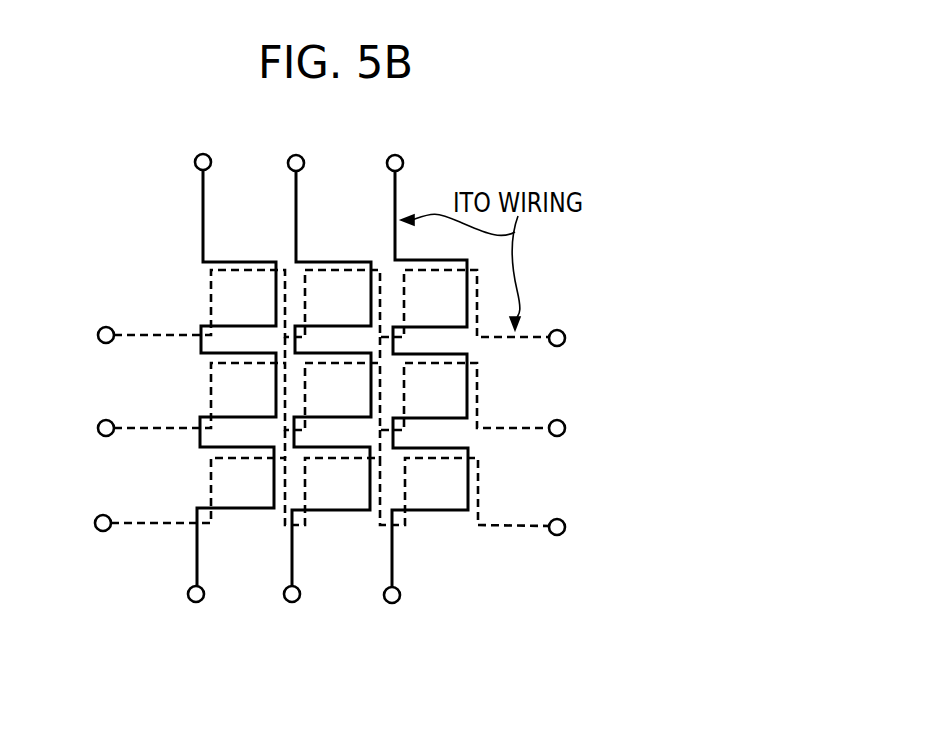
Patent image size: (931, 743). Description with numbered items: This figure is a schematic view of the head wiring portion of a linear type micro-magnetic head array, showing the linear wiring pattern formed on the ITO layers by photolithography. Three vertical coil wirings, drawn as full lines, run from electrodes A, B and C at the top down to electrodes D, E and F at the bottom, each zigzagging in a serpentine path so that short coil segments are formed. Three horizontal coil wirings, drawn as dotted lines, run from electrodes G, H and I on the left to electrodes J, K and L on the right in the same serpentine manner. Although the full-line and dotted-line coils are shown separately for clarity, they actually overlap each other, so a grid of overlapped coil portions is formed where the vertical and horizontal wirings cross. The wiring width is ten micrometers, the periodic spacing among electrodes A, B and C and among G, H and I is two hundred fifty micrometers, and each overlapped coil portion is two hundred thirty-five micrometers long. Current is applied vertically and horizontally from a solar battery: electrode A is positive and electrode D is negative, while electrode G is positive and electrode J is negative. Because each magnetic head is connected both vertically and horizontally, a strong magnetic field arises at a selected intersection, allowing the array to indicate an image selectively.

The electrode A is at (203, 139).
The electrode B is at (297, 140).
The electrode C is at (394, 140).
The electrode D is at (195, 618).
The electrode E is at (291, 618).
The electrode F is at (391, 619).
The electrode G is at (81, 336).
The electrode H is at (81, 427).
The electrode I is at (78, 524).
The electrode J is at (581, 340).
The electrode K is at (581, 432).
The electrode L is at (581, 527).